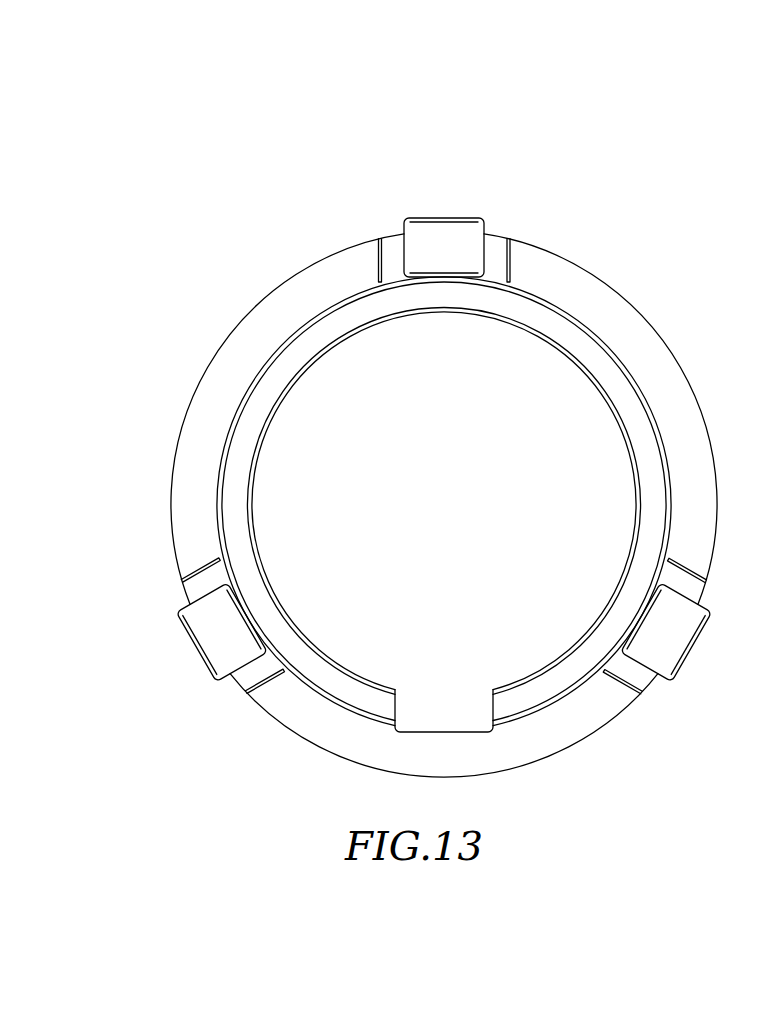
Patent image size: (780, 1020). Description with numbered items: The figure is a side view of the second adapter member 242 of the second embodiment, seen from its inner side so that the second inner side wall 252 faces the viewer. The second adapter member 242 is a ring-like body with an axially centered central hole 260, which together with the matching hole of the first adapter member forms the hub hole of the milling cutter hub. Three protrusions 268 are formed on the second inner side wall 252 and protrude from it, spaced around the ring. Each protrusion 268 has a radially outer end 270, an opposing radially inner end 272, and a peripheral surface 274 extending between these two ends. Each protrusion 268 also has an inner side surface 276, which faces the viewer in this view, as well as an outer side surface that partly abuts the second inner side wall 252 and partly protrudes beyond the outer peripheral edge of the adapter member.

The second adapter member 242 is at (250, 115).
The second inner side wall 252 is at (677, 425).
The central hole 260 is at (282, 517).
The protrusion 268 is at (683, 650).
The radially outer end 270 is at (445, 217).
The radially inner end 272 is at (447, 278).
The peripheral surface 274 is at (380, 237).
The inner side surface 276 is at (425, 249).